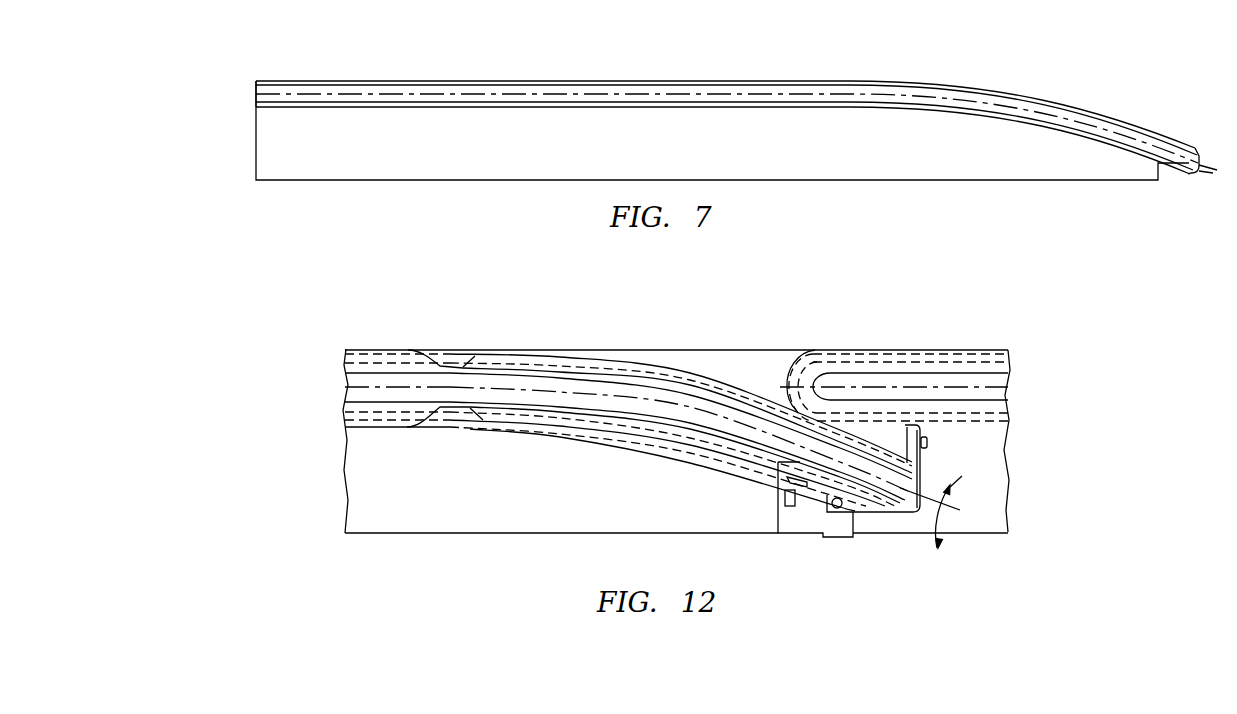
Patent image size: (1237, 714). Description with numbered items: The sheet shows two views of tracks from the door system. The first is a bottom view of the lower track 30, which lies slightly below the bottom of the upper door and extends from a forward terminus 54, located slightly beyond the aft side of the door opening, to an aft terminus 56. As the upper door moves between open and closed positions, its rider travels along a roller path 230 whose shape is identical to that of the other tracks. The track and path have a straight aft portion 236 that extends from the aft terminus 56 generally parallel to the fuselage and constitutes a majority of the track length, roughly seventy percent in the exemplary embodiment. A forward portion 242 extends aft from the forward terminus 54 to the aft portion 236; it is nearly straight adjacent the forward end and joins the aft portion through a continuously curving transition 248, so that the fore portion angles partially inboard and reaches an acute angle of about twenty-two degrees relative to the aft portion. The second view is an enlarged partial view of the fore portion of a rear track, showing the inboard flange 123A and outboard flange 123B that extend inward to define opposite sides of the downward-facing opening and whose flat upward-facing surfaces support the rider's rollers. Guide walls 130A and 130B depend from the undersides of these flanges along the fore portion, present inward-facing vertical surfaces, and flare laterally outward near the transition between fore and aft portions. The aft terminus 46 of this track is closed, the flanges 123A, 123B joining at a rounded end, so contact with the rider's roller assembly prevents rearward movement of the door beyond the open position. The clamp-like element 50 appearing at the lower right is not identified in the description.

In FIG. 7, the lower track 30 is at (958, 78).
In FIG. 7, the aft terminus 56 is at (241, 90).
In FIG. 7, the aft portion 236 is at (413, 93).
In FIG. 7, the roller path 230 is at (636, 92).
In FIG. 7, the forward portion 242 is at (1143, 138).
In FIG. 7, the transition 248 is at (1007, 107).
In FIG. 7, the forward terminus 54 is at (1203, 170).
In FIG. 12, the guide wall 130B is at (527, 365).
In FIG. 12, the guide wall 130A is at (523, 407).
In FIG. 12, the aft terminus 46 is at (823, 383).
In FIG. 12, the outboard flange 123B is at (902, 365).
In FIG. 12, the inboard flange 123A is at (975, 405).
In FIG. 12, the clamp bracket 50 is at (903, 493).